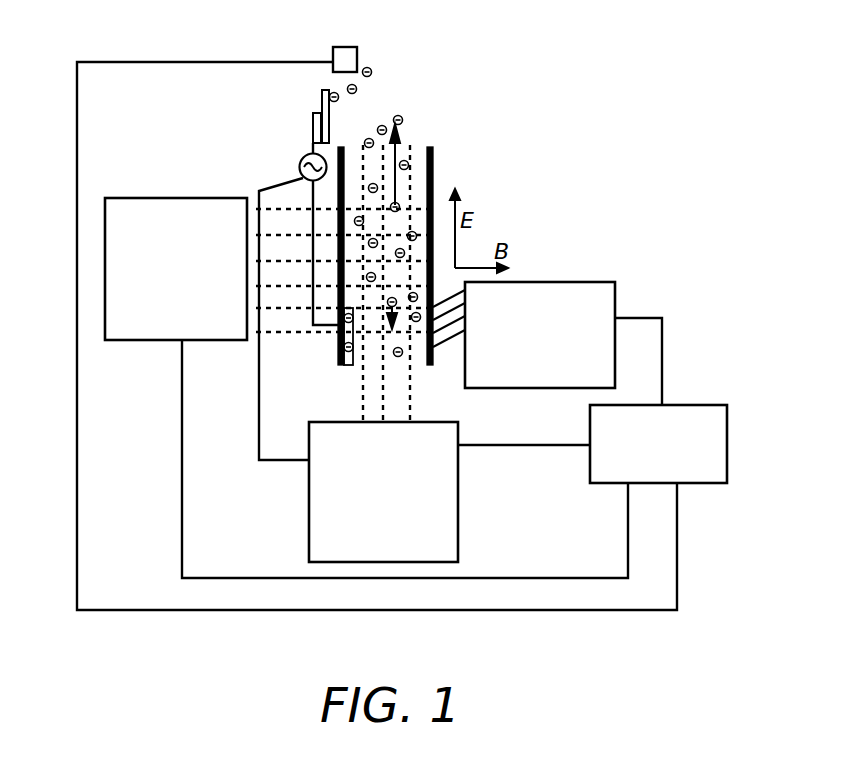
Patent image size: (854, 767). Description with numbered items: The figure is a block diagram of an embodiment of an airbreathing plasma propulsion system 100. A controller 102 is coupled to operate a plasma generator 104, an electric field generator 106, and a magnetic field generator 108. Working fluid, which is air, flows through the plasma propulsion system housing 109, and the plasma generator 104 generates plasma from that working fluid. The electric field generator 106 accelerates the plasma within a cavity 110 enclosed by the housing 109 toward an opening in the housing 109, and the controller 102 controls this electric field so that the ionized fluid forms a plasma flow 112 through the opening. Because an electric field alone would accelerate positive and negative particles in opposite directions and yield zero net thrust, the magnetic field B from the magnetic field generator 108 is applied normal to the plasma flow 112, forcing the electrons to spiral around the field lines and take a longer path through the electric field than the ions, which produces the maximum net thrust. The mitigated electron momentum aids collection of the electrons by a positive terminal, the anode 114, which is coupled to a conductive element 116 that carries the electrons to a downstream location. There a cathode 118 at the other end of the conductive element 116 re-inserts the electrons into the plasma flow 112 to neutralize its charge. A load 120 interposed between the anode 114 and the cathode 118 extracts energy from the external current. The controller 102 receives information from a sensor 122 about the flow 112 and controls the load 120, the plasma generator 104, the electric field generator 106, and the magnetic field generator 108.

The airbreathing plasma propulsion system 100 is at (592, 40).
The controller 102 is at (658, 444).
The plasma generator 104 is at (540, 335).
The electric field generator 106 is at (383, 492).
The magnetic field generator 108 is at (176, 269).
The housing 109 is at (433, 152).
The cavity 110 is at (428, 178).
The plasma flow 112 is at (400, 128).
The anode 114 is at (343, 341).
The conductive element 116 is at (313, 123).
The cathode 118 is at (322, 99).
The load 120 is at (299, 167).
The sensor 122 is at (336, 47).